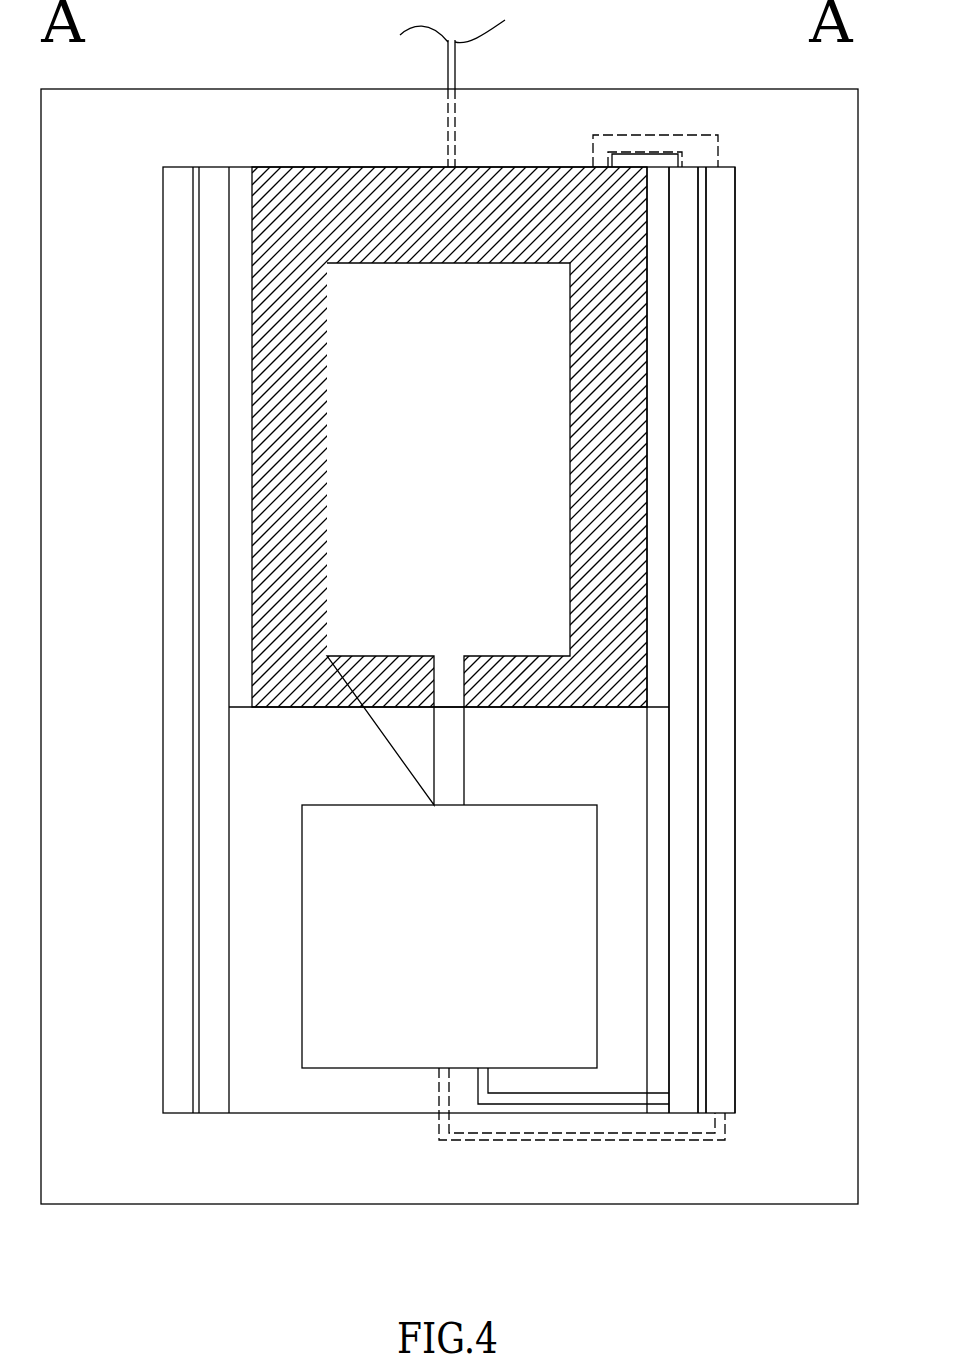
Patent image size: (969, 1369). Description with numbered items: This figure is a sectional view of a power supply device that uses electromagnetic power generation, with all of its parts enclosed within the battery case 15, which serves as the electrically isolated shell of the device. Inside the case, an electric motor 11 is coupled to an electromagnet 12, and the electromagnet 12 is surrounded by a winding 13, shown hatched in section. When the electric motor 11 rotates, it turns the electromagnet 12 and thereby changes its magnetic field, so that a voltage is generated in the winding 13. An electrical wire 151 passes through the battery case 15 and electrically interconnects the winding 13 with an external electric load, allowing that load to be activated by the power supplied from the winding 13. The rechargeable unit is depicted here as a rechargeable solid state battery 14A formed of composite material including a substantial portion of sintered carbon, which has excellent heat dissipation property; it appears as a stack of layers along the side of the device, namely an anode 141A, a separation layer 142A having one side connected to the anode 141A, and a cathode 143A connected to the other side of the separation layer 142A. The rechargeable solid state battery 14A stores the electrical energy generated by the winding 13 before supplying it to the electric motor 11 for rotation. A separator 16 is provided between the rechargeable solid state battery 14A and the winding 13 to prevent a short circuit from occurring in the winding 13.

The electric motor 11 is at (374, 1068).
The electromagnet 12 is at (393, 590).
The winding 13 is at (314, 205).
The rechargeable solid state battery 14A is at (747, 734).
The anode 141A is at (728, 1092).
The separation layer 142A is at (703, 1050).
The cathode 143A is at (682, 968).
The battery case 15 is at (547, 89).
The electrical wire 151 is at (448, 82).
The separator 16 is at (658, 570).